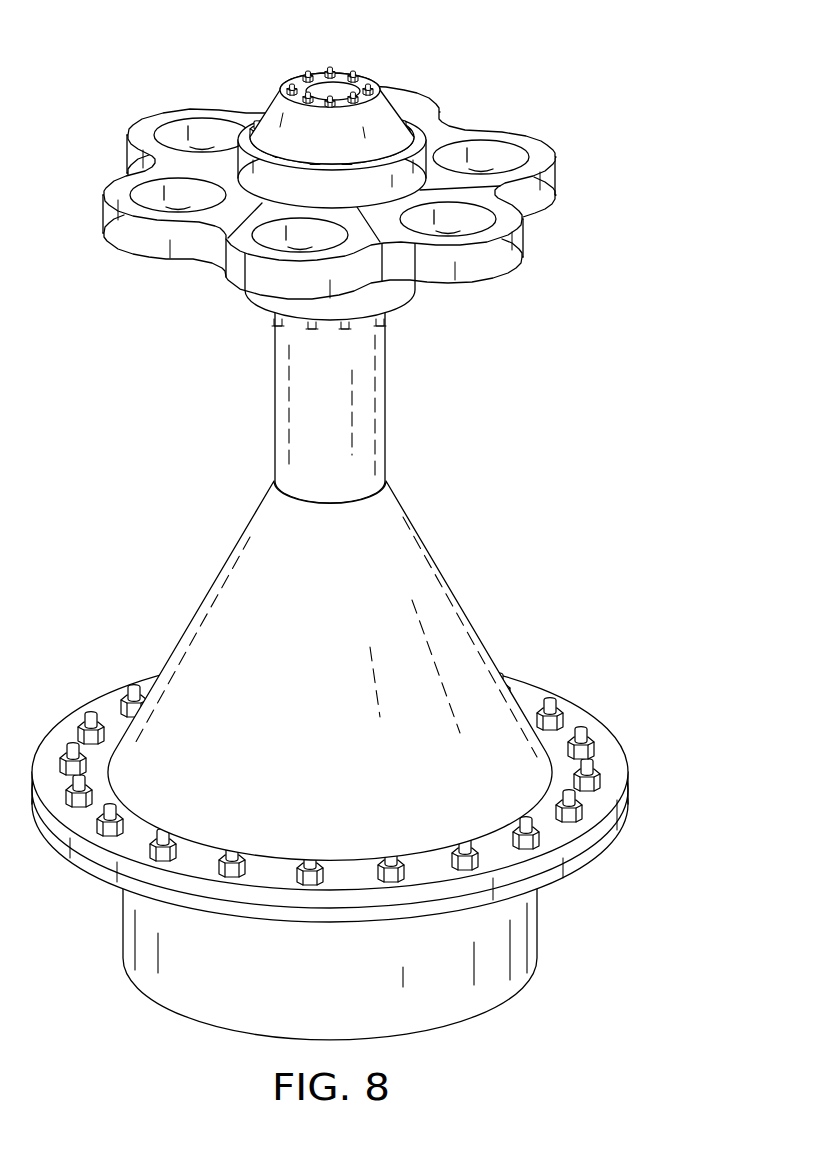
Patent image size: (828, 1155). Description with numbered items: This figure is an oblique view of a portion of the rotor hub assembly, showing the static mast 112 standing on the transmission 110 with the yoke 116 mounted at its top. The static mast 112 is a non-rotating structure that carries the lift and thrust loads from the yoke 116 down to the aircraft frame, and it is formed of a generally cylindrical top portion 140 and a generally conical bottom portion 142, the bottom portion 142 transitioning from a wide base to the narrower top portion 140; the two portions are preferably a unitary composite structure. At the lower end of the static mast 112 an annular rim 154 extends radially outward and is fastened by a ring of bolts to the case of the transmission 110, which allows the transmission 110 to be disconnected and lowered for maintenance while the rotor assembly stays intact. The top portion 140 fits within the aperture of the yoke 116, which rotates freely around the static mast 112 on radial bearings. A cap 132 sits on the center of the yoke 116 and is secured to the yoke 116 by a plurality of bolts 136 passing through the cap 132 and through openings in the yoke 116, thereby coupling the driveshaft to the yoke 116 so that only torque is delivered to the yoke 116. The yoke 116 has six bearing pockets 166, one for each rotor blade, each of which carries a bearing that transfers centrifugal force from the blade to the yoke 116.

The transmission 110 is at (123, 923).
The static mast 112 is at (460, 603).
The yoke 116 is at (563, 175).
The cap 132 is at (298, 78).
The bolts 136 is at (256, 124).
The top portion 140 is at (388, 402).
The bottom portion 142 is at (213, 587).
The annular rim 154 is at (613, 762).
The bearing pockets 166 is at (207, 203).